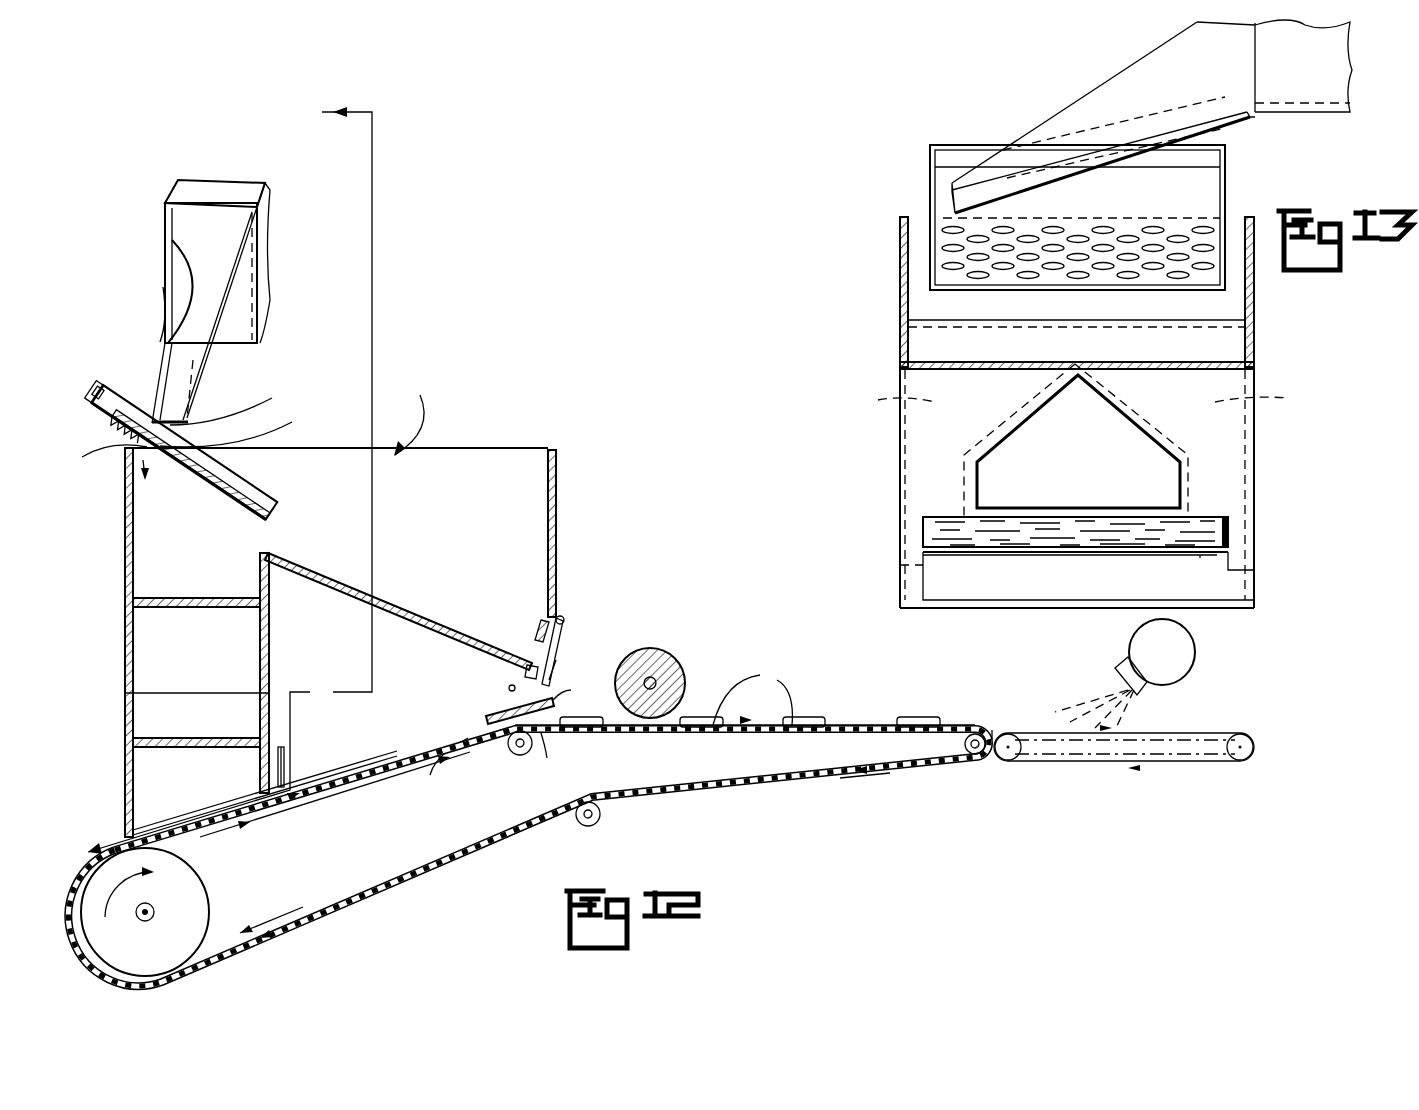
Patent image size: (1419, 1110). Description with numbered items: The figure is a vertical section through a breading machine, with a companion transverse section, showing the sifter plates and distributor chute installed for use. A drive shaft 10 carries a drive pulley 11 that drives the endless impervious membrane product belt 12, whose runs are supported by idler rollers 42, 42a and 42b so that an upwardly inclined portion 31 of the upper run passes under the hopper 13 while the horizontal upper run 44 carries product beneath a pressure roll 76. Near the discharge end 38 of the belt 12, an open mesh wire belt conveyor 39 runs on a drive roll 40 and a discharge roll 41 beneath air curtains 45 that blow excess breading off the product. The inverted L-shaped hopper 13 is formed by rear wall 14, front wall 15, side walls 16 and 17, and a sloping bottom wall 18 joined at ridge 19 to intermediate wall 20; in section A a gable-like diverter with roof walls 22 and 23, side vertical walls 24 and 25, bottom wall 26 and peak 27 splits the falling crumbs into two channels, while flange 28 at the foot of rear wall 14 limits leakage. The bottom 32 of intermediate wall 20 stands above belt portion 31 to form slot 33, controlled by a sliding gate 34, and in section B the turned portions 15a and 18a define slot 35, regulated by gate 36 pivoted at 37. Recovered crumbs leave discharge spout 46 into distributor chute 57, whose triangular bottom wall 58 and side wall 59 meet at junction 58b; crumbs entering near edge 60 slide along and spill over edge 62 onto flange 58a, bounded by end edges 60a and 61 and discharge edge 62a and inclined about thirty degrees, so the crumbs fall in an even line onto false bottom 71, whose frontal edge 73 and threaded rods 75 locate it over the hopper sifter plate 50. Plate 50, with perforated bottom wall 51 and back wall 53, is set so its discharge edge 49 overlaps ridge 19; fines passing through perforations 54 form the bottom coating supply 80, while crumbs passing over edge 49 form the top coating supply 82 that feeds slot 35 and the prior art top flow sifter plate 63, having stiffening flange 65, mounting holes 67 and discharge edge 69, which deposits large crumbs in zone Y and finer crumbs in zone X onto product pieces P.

In FIG. 12, the drive shaft 10 is at (136, 915).
In FIG. 12, the drive pulley 11 is at (208, 889).
In FIG. 12, the endless impervious membrane belt 12 is at (368, 893).
In FIG. 12, the hopper 13 is at (515, 448).
In FIG. 12, the rear wall 14 is at (125, 513).
In FIG. 13, the rear wall 14 is at (905, 248).
In FIG. 12, the front wall 15 is at (557, 482).
In FIG. 12, the turned portion of front wall 15a is at (540, 633).
In FIG. 13, the side wall 16 is at (900, 303).
In FIG. 12, the side wall 17 is at (453, 474).
In FIG. 12, the sloping bottom wall 18 is at (408, 604).
In FIG. 12, the turned portion of bottom wall 18a is at (525, 669).
In FIG. 12, the ridge 19 is at (262, 557).
In FIG. 13, the ridge 19 is at (1200, 322).
In FIG. 12, the intermediate wall 20 is at (268, 662).
In FIG. 13, the intermediate wall 20 is at (1215, 428).
In FIG. 13, the sloping roof wall 22 is at (1125, 424).
In FIG. 13, the sloping roof wall 23 is at (1028, 420).
In FIG. 13, the side vertical wall 24 is at (1180, 486).
In FIG. 13, the side vertical wall 25 is at (978, 490).
In FIG. 12, the bottom wall 26 is at (175, 738).
In FIG. 13, the bottom wall 26 is at (1080, 510).
In FIG. 12, the peak or ridge 27 is at (186, 600).
In FIG. 13, the peak or ridge 27 is at (1097, 362).
In FIG. 13, the flange 28 is at (1020, 596).
In FIG. 12, the upwardly inclined belt portion 31 is at (357, 770).
In FIG. 12, the bottom of intermediate wall 32 is at (263, 783).
In FIG. 13, the bottom of intermediate wall 32 is at (1200, 556).
In FIG. 12, the slot 33 is at (265, 797).
In FIG. 12, the sliding gate 34 is at (285, 753).
In FIG. 13, the sliding gate 34 is at (1232, 520).
In FIG. 12, the slot 35 is at (537, 653).
In FIG. 12, the gate 36 is at (556, 652).
In FIG. 12, the pivot attachment 37 is at (565, 616).
In FIG. 12, the discharge end 38 is at (992, 735).
In FIG. 12, the open mesh wire belt conveyor 39 is at (1148, 723).
In FIG. 12, the drive roll 40 is at (1018, 758).
In FIG. 12, the discharge roll 41 is at (1236, 758).
In FIG. 12, the idler roller 42 is at (522, 756).
In FIG. 12, the idler roller 42a is at (968, 752).
In FIG. 12, the roller 42b is at (588, 827).
In FIG. 12, the upper belt run 44 is at (840, 725).
In FIG. 12, the air curtain 45 is at (1080, 697).
In FIG. 12, the discharge spout 46 is at (170, 192).
In FIG. 13, the discharge spout 46 is at (1256, 60).
In FIG. 12, the discharge edge 49 is at (280, 522).
In FIG. 13, the discharge edge 49 is at (1163, 290).
In FIG. 12, the hopper sifter plate 50 is at (93, 366).
In FIG. 13, the hopper sifter plate 50 is at (1235, 185).
In FIG. 12, the bottom wall 51 is at (238, 520).
In FIG. 12, the back wall 53 is at (98, 387).
In FIG. 13, the back wall 53 is at (972, 147).
In FIG. 12, the perforations 54 is at (175, 480).
In FIG. 12, the distributor chute 57 is at (258, 281).
In FIG. 13, the distributor chute 57 is at (1077, 93).
In FIG. 12, the bottom wall 58 is at (190, 372).
In FIG. 12, the flange 58a is at (167, 377).
In FIG. 13, the flange 58a is at (1012, 191).
In FIG. 12, the junction 58b is at (185, 405).
In FIG. 13, the junction 58b is at (952, 200).
In FIG. 12, the side wall 59 is at (237, 230).
In FIG. 13, the side wall 59 is at (1154, 75).
In FIG. 12, the edge 60 is at (172, 240).
In FIG. 12, the flange end edge 60a is at (163, 287).
In FIG. 12, the flange end edge 61 is at (238, 404).
In FIG. 13, the flange end edge 61 is at (950, 208).
In FIG. 12, the edge 62 is at (155, 388).
In FIG. 12, the discharge edge 62a is at (153, 400).
In FIG. 12, the top flow sifter plate 63 is at (548, 722).
In FIG. 12, the stiffening flange 65 is at (556, 702).
In FIG. 12, the mounting holes 67 is at (508, 687).
In FIG. 12, the discharge edge 69 is at (488, 716).
In FIG. 12, the false bottom plate 71 is at (110, 428).
In FIG. 12, the frontal edge 73 is at (241, 427).
In FIG. 12, the threaded rods 75 is at (85, 398).
In FIG. 12, the roll 76 is at (672, 657).
In FIG. 12, the bottom-coating layer supply 80 is at (160, 760).
In FIG. 12, the top coating supply 82 is at (527, 528).